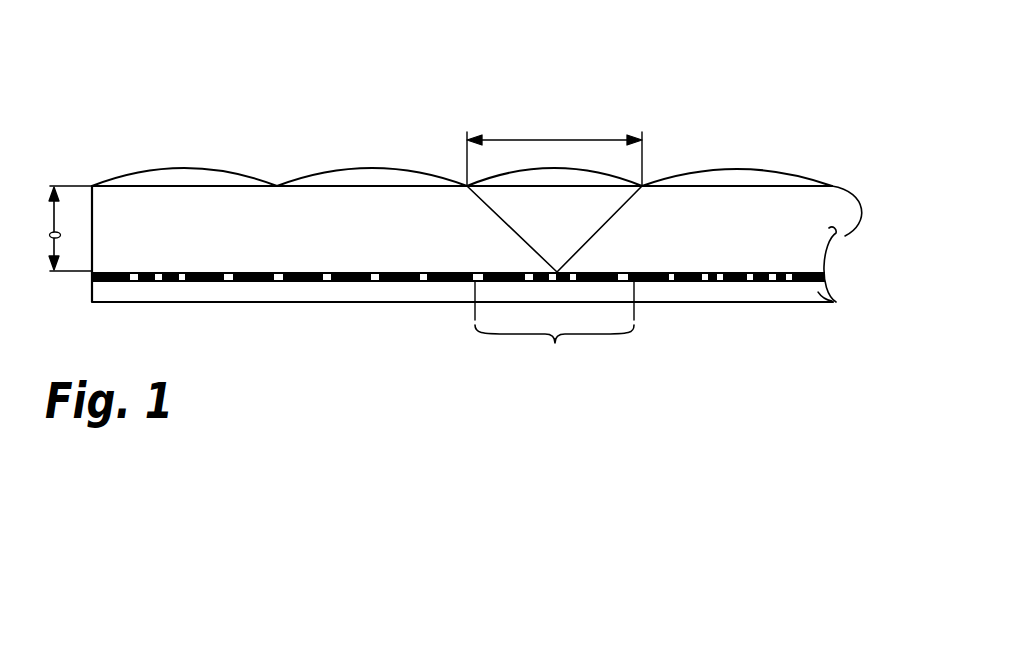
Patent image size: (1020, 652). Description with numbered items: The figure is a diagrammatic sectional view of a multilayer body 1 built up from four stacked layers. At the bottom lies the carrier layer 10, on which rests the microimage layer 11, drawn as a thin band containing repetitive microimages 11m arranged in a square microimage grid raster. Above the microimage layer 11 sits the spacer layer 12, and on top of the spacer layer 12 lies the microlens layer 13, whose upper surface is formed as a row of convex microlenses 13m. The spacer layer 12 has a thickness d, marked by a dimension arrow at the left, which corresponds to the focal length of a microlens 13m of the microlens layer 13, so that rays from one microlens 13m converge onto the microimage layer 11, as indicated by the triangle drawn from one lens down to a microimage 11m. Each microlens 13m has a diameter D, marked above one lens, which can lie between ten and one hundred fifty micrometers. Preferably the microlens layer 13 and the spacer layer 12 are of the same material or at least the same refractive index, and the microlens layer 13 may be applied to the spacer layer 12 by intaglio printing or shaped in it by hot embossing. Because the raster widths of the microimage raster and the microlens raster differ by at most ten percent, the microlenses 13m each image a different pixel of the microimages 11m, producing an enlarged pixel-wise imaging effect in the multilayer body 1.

The multilayer body 1 is at (690, 72).
The carrier layer 10 is at (836, 302).
The microimage layer 11 is at (822, 279).
The microimage 11m is at (554, 335).
The spacer layer 12 is at (845, 236).
The microlens layer 13 is at (502, 142).
The microlens 13m is at (721, 184).
The diameter D is at (549, 141).
The thickness d is at (49, 236).